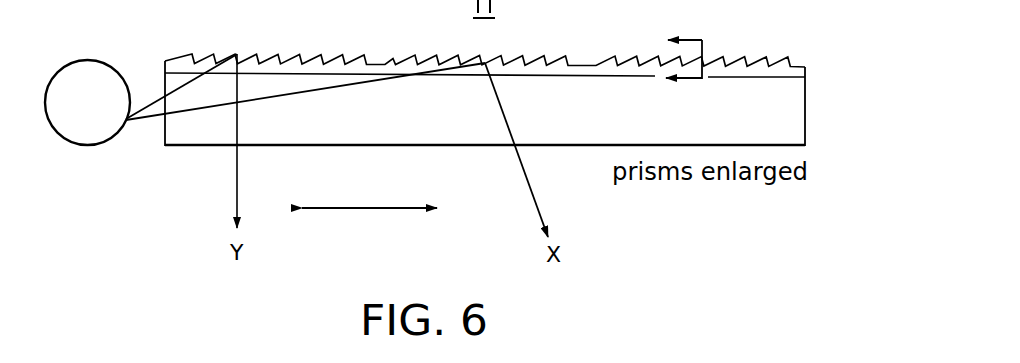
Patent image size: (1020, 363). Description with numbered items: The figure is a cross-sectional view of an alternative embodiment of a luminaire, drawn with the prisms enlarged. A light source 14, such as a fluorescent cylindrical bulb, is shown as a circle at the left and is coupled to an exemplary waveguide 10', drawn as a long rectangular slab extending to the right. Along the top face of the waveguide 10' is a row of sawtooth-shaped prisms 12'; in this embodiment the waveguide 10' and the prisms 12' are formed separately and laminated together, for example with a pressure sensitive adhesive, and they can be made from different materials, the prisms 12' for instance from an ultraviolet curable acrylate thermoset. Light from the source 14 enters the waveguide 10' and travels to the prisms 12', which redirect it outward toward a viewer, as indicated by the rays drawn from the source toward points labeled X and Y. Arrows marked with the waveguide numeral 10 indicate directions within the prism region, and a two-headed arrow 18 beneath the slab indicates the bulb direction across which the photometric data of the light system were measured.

The waveguide 10 is at (671, 62).
The waveguide 10' is at (512, 103).
The prisms 12' is at (485, 35).
The light source 14 is at (77, 132).
The two-headed arrow 18 is at (385, 208).